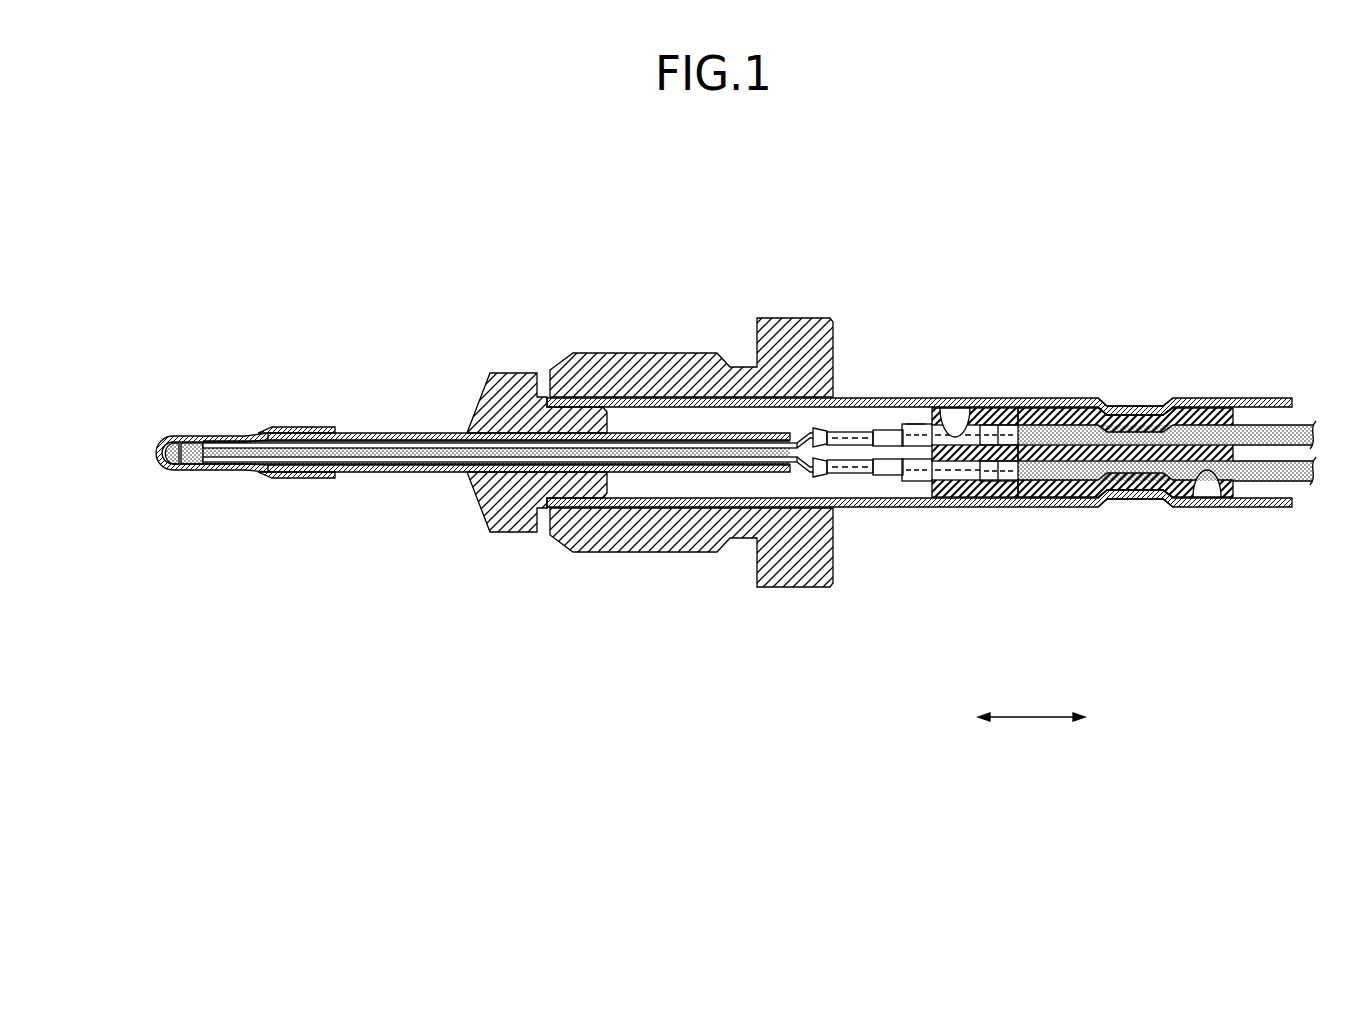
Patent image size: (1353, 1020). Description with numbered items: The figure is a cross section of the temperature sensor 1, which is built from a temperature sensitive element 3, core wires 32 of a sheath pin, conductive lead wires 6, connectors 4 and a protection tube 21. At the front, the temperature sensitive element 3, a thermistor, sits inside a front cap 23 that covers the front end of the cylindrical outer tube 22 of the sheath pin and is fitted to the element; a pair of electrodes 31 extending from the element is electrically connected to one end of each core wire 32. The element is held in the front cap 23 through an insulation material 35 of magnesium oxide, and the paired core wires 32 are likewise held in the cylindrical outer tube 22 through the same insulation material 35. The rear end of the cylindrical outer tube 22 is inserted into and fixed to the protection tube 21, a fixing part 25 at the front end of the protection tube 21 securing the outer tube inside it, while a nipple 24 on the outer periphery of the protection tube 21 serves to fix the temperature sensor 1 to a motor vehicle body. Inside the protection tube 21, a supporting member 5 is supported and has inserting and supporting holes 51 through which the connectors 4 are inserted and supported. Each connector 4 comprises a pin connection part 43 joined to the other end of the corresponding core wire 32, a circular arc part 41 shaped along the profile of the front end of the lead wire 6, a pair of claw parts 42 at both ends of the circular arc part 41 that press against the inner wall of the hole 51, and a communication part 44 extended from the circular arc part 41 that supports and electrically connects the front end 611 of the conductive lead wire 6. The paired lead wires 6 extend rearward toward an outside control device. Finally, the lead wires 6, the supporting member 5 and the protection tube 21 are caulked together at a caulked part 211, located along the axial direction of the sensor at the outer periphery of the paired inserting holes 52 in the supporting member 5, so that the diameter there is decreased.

The temperature sensor 1 is at (547, 587).
The temperature sensitive element 3 is at (188, 472).
The connector 4 is at (889, 564).
The supporting member 5 is at (1131, 450).
The conductive lead wire 6 is at (1085, 430).
The protection tube 21 is at (919, 543).
The cylindrical outer tube of sheath pin 22 is at (473, 511).
The front cap 23 is at (240, 437).
The nipple 24 is at (655, 372).
The fixing part 25 is at (510, 415).
The electrode 31 is at (223, 472).
The core wire of sheath pin 32 is at (375, 445).
The insulation material 35 is at (353, 472).
The circular arc part 41 is at (997, 482).
The claw part 42 is at (1009, 506).
The pin connection part 43 is at (835, 475).
The communication part 44 is at (917, 481).
The inserting and supporting hole 51 is at (948, 408).
The inserting hole 52 is at (1217, 486).
The caulked part 211 is at (1137, 505).
The front end of conductive lead wire 611 is at (915, 415).